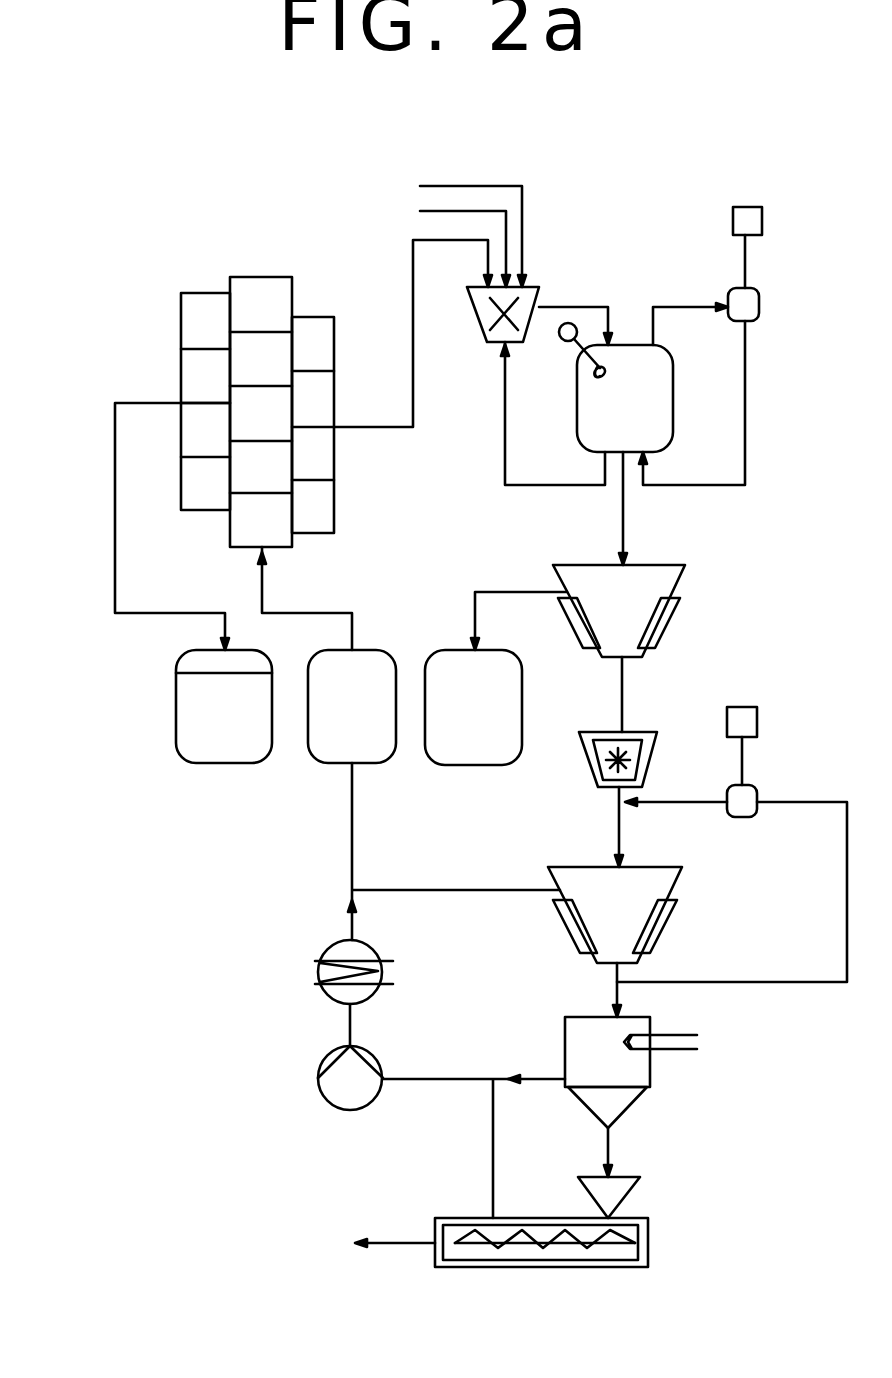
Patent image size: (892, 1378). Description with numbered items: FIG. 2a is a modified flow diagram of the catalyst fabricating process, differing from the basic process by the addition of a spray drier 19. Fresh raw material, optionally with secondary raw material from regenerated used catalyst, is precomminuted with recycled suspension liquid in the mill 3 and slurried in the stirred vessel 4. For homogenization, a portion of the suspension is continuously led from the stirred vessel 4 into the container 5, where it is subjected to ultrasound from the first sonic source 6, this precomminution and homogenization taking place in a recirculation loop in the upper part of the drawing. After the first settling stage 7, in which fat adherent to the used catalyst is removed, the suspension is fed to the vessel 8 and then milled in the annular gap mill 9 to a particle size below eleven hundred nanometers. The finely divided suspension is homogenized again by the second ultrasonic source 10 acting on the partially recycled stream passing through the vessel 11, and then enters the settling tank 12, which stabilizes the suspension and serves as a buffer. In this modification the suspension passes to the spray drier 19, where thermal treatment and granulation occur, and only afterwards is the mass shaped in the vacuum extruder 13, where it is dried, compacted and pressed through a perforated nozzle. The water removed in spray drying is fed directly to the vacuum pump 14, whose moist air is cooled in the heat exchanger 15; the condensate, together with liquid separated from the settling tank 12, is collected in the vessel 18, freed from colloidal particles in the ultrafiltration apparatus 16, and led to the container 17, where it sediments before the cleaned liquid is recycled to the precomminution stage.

The mill 3 is at (537, 298).
The stirred vessel 4 is at (634, 345).
The container 5 is at (759, 305).
The first sonic source 6 is at (762, 217).
The first settling stage 7 is at (688, 585).
The vessel 8 is at (470, 765).
The annular gap mill 9 is at (590, 764).
The second ultrasonic source 10 is at (757, 715).
The vessel 11 is at (757, 790).
The settling tank 12 is at (682, 885).
The vacuum extruder 13 is at (648, 1243).
The vacuum pump 14 is at (320, 1080).
The heat exchanger 15 is at (318, 983).
The ultrafiltration apparatus 16 is at (260, 262).
The container 17 is at (240, 765).
The vessel 18 is at (330, 765).
The spray drier 19 is at (622, 1110).